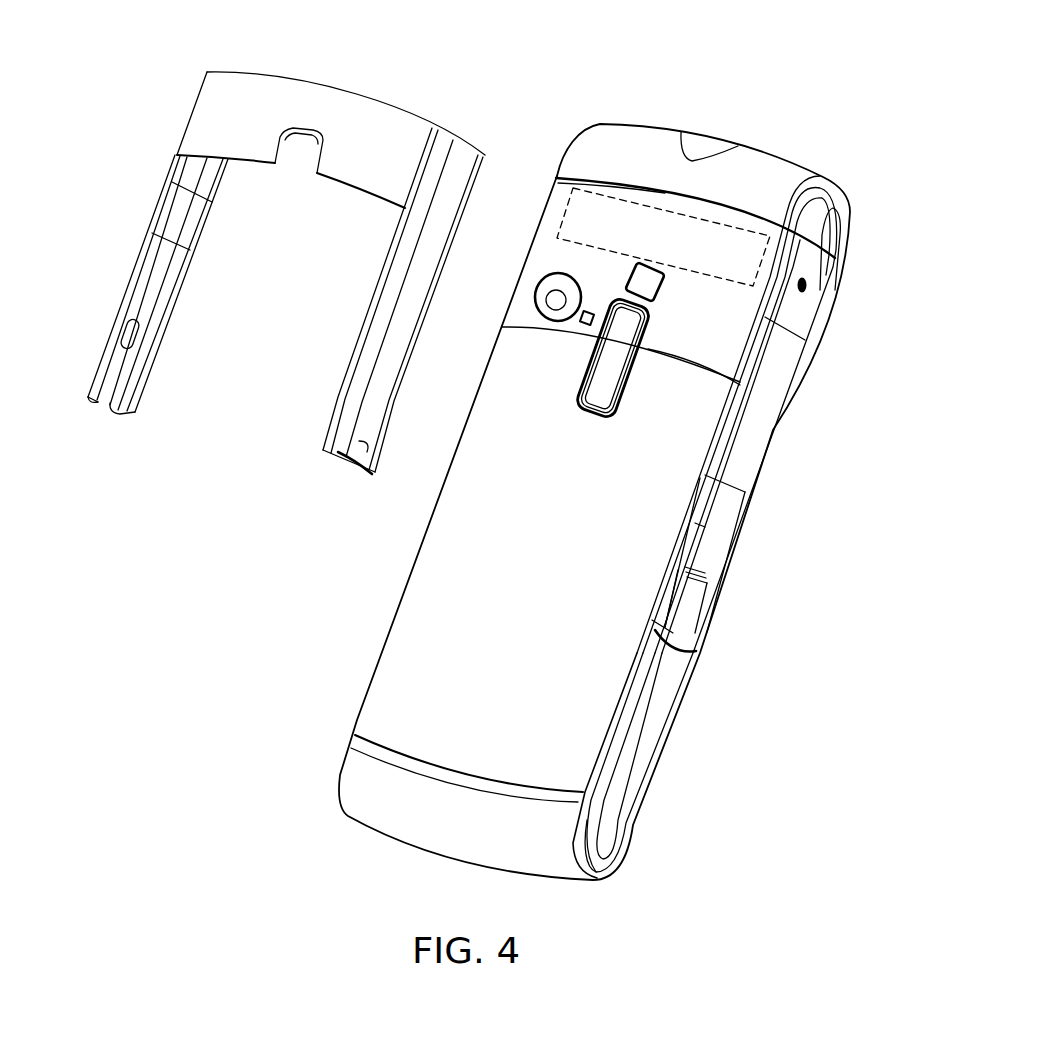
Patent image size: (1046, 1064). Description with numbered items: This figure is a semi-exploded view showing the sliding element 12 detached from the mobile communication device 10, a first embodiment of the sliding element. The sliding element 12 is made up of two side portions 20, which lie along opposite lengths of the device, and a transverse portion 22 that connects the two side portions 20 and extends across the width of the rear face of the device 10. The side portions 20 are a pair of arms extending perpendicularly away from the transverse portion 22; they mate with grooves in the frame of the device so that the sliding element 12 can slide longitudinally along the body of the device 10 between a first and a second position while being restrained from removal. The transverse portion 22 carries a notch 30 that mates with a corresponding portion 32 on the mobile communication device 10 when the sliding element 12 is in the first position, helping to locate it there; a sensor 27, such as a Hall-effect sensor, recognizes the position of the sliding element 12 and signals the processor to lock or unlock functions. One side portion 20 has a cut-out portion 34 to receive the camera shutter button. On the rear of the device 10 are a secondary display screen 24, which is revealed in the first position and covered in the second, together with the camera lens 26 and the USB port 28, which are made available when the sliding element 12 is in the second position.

The mobile communication device 10 is at (784, 103).
The sliding element 12 is at (383, 68).
The side portions 20 is at (132, 280).
The transverse portion 22 is at (223, 86).
The secondary display screen 24 is at (743, 253).
The camera lens 26 is at (557, 295).
The sensor 27 is at (807, 286).
The USB port 28 is at (678, 603).
The notch 30 is at (298, 160).
The corresponding portion 32 is at (627, 335).
The cut-out portion 34 is at (105, 405).